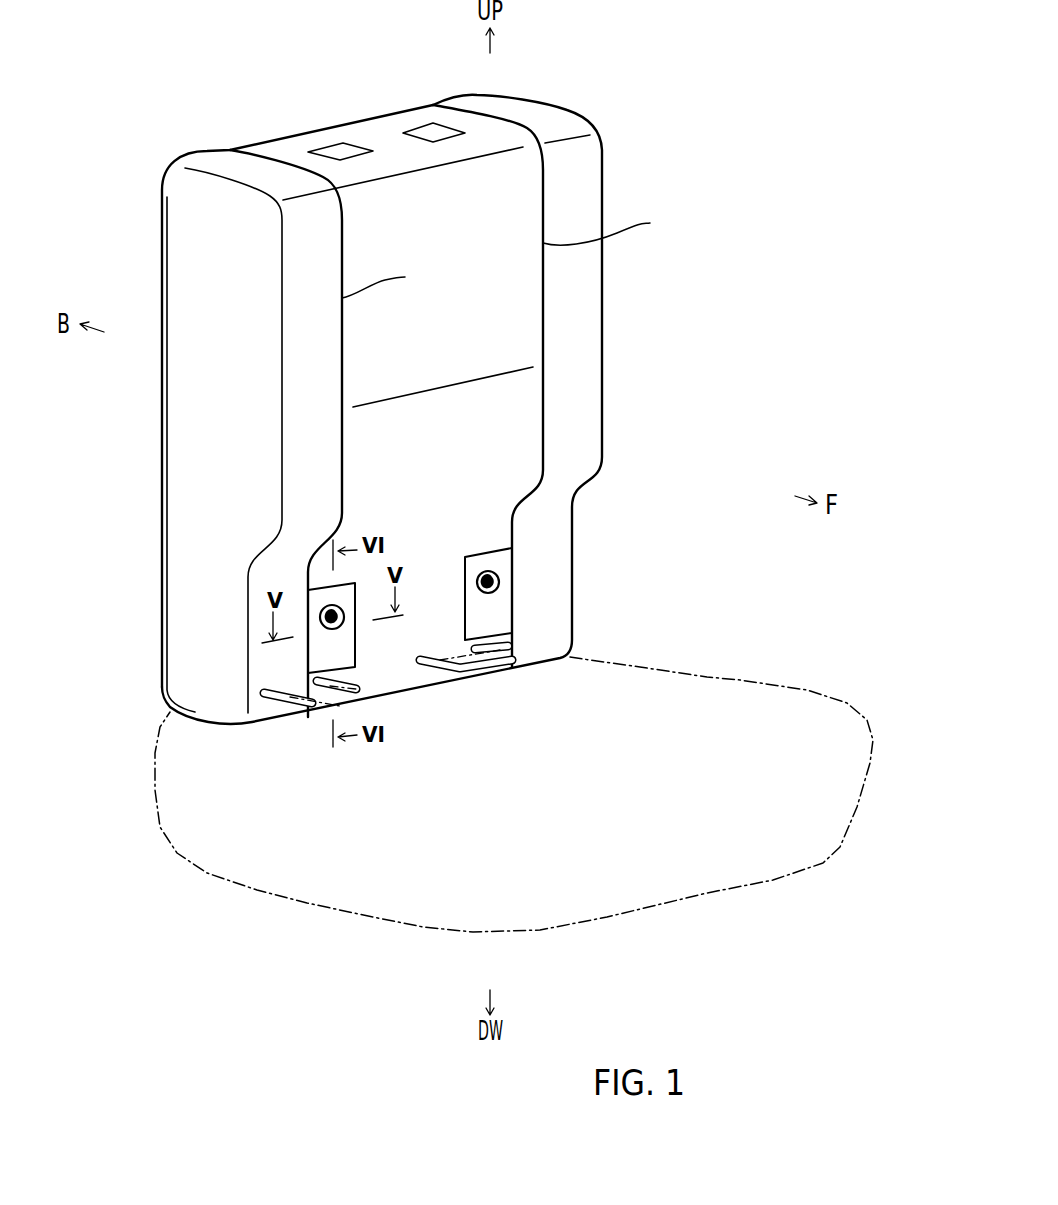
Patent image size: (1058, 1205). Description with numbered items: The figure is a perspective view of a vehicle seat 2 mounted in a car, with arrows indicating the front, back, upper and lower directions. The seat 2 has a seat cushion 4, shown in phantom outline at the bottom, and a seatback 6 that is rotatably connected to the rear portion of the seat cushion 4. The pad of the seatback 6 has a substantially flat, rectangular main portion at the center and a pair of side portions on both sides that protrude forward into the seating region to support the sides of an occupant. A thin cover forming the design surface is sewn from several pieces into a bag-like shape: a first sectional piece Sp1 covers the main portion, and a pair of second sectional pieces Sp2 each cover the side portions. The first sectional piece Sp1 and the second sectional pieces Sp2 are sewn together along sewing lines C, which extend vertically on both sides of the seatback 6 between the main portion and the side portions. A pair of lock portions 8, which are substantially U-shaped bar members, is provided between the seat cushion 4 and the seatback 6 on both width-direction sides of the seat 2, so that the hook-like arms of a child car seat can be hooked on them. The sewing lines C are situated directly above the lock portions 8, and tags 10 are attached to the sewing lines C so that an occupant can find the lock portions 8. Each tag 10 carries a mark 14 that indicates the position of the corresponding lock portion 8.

The seat 2 is at (688, 70).
The seat cushion 4 is at (713, 675).
The seatback 6 is at (611, 163).
The lock portion 8 is at (482, 650).
The tag 10 is at (370, 586).
The mark 14 is at (497, 582).
The sewing line C is at (505, 254).
The first sectional piece Sp1 is at (497, 348).
The second sectional piece Sp2 is at (573, 380).